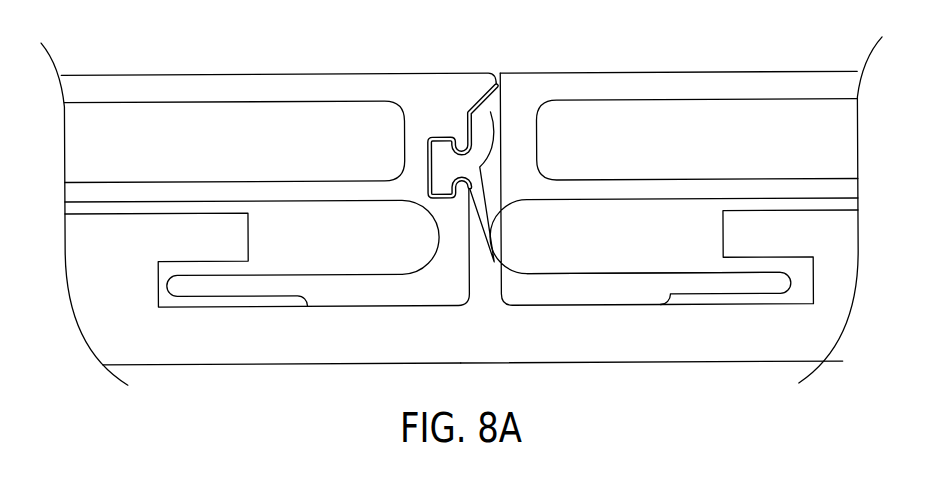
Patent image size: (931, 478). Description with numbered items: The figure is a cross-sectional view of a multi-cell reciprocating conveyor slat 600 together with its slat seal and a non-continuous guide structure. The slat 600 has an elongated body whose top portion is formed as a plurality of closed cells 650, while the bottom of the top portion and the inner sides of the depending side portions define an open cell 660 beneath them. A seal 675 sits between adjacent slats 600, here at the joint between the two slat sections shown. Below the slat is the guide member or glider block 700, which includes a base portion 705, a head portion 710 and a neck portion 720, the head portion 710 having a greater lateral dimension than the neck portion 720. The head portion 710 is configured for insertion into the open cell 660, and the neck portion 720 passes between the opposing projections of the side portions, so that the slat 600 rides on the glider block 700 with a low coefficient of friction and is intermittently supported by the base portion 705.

The slat 600 is at (682, 85).
The closed cells 650 is at (733, 107).
The open cell 660 is at (625, 261).
The seal 675 is at (489, 116).
The glider block 700 is at (643, 348).
The base portion 705 is at (333, 349).
The head portion 710 is at (103, 229).
The neck portion 720 is at (113, 289).